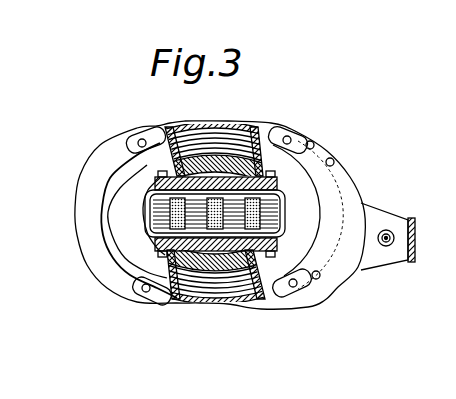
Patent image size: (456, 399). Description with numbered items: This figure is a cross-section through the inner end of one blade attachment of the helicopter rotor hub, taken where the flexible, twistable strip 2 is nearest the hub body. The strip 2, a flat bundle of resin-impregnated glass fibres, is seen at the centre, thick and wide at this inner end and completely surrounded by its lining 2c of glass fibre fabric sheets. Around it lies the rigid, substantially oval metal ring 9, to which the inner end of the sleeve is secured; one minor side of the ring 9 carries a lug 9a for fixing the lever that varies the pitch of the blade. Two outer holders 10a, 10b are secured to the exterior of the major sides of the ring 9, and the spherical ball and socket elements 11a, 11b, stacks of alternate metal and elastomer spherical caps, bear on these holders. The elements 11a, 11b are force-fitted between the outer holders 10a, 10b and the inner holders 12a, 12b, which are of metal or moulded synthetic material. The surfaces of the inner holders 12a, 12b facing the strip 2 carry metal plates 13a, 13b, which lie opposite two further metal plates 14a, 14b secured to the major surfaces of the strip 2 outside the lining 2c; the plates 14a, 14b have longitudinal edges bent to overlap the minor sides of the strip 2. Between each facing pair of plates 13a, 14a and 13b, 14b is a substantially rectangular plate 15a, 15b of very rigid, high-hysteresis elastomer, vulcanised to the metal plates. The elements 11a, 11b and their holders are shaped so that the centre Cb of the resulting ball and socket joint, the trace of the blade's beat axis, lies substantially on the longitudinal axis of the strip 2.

The flexible twistable strip 2 is at (102, 232).
The lining 2c is at (277, 220).
The rigid ring 9 is at (345, 172).
The lug 9a is at (366, 243).
The outer holder 10a is at (229, 308).
The outer holder 10b is at (246, 122).
The spherical ball and socket element 11a is at (193, 303).
The spherical ball and socket element 11b is at (198, 121).
The inner holder 12a is at (168, 302).
The inner holder 12b is at (135, 130).
The metal plate 13a is at (167, 240).
The metal plate 13b is at (163, 177).
The metal plate 14a is at (87, 258).
The metal plate 14b is at (98, 150).
The rectangular elastomer plate 15a is at (322, 272).
The rectangular elastomer plate 15b is at (297, 145).
The beat axis trace Cb is at (285, 212).